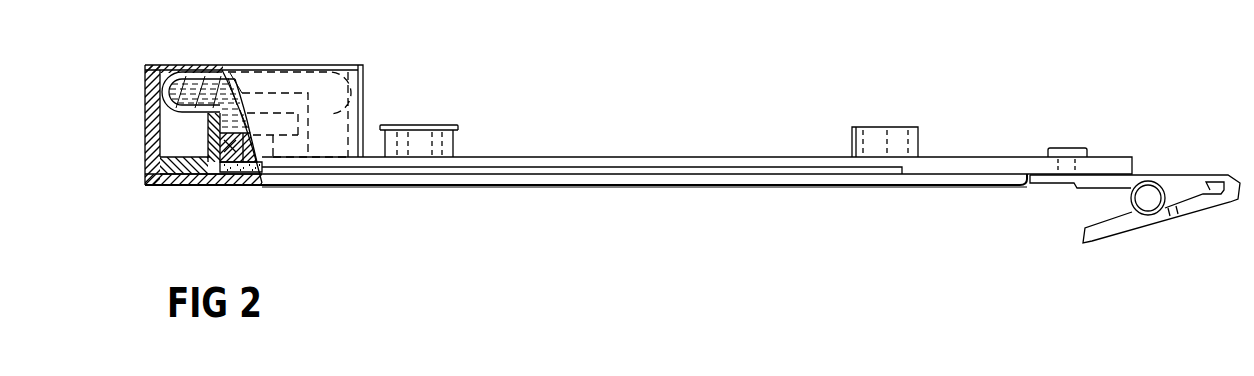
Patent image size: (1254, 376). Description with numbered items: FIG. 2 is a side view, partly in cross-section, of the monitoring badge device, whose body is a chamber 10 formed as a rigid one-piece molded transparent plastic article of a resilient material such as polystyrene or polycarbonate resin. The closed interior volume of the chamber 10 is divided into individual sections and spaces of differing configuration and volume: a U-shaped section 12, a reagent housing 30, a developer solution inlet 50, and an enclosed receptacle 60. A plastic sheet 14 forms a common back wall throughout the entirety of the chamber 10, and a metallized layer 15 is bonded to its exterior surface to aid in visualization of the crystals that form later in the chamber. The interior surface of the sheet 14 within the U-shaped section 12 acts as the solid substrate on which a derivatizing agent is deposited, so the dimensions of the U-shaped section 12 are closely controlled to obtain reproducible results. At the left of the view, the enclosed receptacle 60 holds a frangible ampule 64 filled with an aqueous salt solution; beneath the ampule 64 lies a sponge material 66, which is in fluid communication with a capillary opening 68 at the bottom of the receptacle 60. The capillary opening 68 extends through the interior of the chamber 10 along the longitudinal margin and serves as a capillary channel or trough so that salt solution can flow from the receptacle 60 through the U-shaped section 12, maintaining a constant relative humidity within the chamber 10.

The chamber 10 is at (998, 154).
The U-shaped section 12 is at (670, 158).
The plastic sheet 14 is at (672, 177).
The metallized layer 15 is at (932, 184).
The reagent housing 30 is at (886, 121).
The developer solution inlet 50 is at (423, 143).
The enclosed receptacle 60 is at (190, 120).
The frangible ampule 64 is at (189, 78).
The sponge material 66 is at (237, 160).
The capillary opening 68 is at (240, 170).